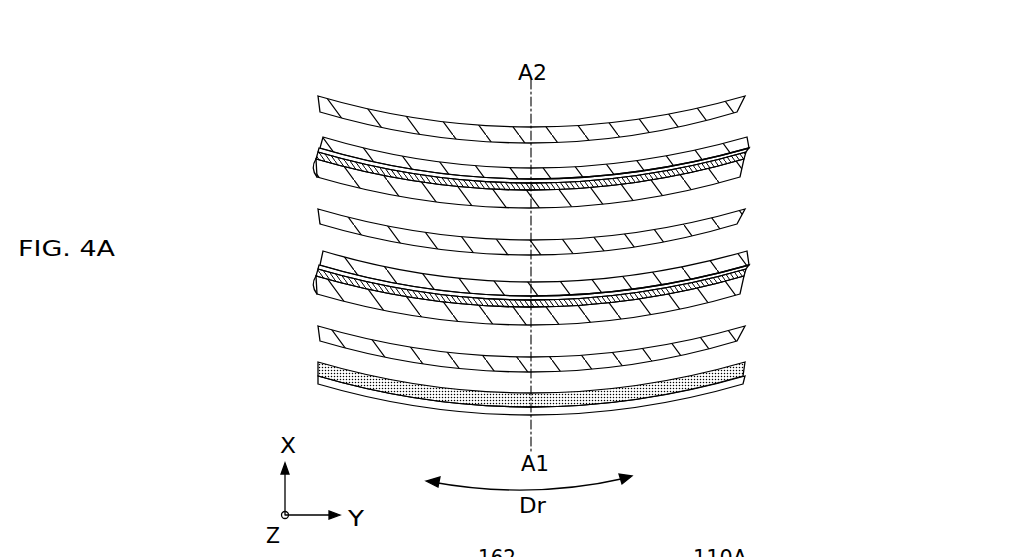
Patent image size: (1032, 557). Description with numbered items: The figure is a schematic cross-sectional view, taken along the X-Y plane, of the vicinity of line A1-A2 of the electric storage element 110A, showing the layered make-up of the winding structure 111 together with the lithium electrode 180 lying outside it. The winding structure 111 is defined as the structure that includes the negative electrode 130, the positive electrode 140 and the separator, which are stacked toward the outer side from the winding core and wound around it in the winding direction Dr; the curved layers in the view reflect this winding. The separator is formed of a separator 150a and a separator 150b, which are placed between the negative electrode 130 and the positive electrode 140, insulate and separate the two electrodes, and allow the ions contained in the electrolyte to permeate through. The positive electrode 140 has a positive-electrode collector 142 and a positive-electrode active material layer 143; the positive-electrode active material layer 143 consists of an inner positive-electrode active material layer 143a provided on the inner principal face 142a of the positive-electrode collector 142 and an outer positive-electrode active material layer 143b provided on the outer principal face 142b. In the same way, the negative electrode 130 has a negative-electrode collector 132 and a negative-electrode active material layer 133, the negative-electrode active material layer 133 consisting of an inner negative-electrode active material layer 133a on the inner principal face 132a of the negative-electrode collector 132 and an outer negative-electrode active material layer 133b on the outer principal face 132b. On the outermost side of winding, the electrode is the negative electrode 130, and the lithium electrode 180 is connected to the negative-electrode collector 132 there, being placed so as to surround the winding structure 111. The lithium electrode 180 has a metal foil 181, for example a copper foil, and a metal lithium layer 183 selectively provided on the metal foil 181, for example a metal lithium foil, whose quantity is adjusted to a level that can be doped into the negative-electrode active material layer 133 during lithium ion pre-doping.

The electric storage element 110A is at (703, 61).
The winding structure 111 is at (228, 90).
The separator 150a is at (318, 106).
The separator 150b is at (318, 215).
The positive electrode 140 is at (874, 105).
The positive-electrode collector 142 is at (718, 148).
The principal face 142a is at (322, 146).
The principal face 142b is at (318, 172).
The positive-electrode active material layer 143 is at (816, 142).
The positive-electrode active material layer 143a is at (747, 149).
The positive-electrode active material layer 143b is at (742, 178).
The negative electrode 130 is at (874, 223).
The negative-electrode collector 132 is at (718, 264).
The principal face 132a is at (322, 260).
The principal face 132b is at (318, 288).
The negative-electrode active material layer 133 is at (816, 258).
The negative-electrode active material layer 133a is at (747, 265).
The negative-electrode active material layer 133b is at (742, 294).
The lithium electrode 180 is at (236, 352).
The metal lithium layer 183 is at (318, 370).
The metal foil 181 is at (318, 385).